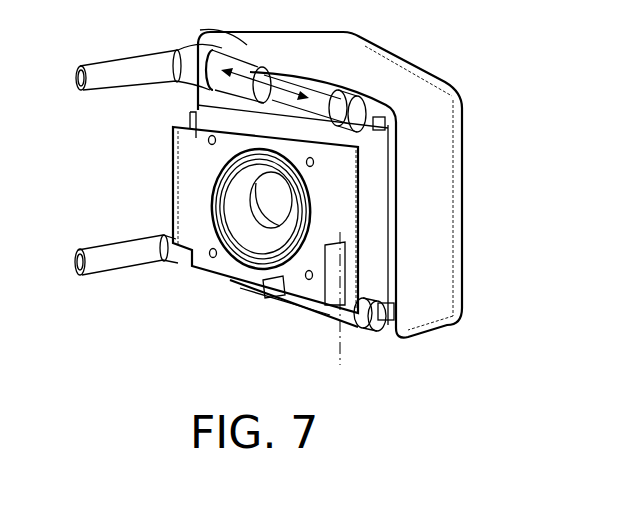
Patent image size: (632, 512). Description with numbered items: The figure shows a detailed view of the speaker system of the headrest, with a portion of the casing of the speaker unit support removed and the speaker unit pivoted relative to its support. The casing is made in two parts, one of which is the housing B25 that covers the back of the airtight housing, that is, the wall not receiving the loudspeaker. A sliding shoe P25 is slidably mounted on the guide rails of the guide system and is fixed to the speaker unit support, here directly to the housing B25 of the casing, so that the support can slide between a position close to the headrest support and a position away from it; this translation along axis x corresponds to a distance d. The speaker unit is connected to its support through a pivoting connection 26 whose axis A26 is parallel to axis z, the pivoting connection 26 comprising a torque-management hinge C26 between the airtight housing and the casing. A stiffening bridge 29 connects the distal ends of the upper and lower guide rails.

The housing B25 is at (432, 52).
The sliding shoe P25 is at (216, 84).
The distance d is at (280, 90).
The stiffening bridge 29 is at (232, 292).
The pivoting connection 26 is at (363, 350).
The axis A26 is at (318, 336).
The torque-management hinge C26 is at (348, 305).